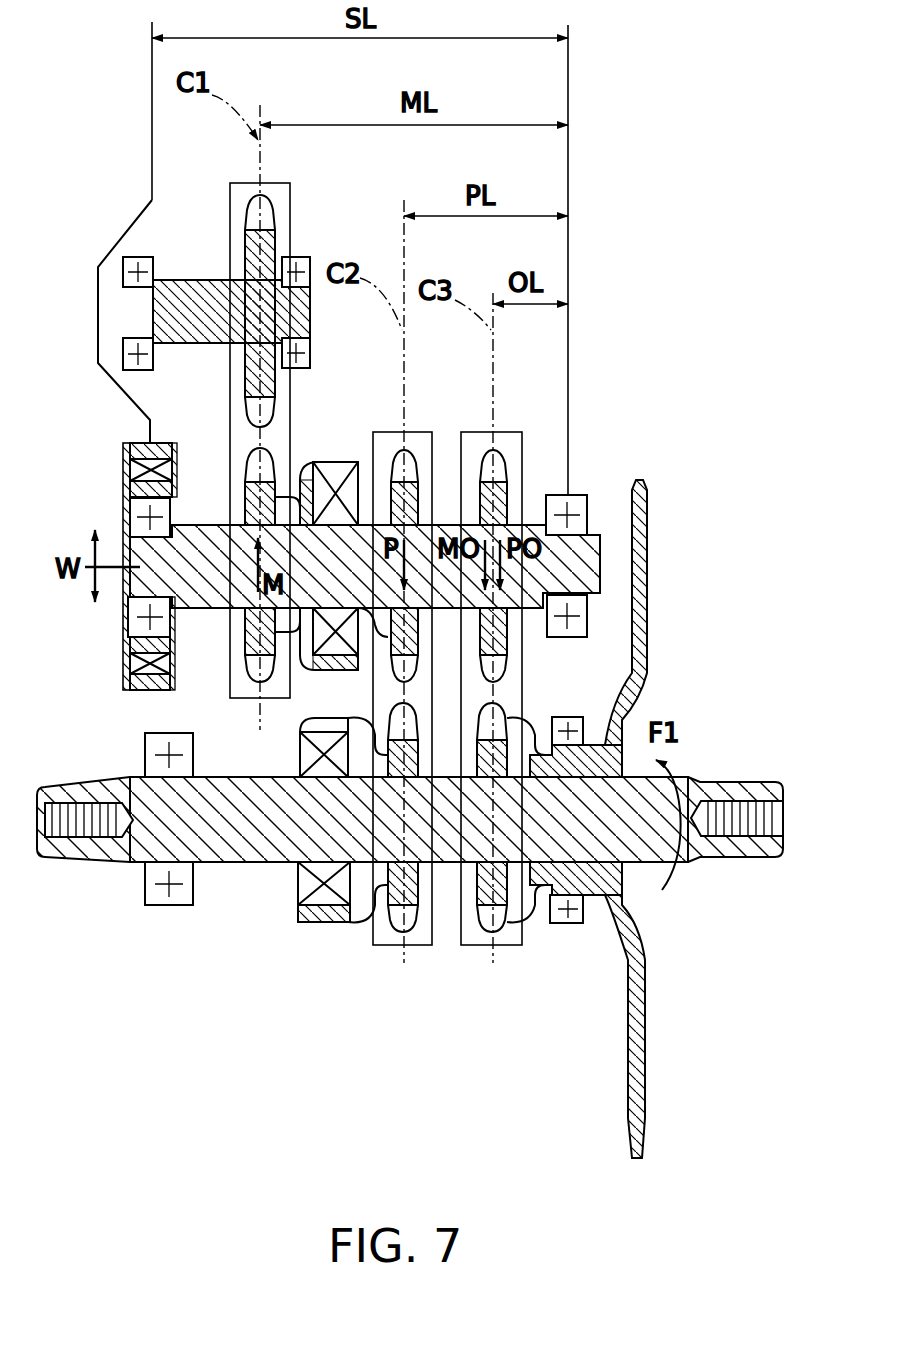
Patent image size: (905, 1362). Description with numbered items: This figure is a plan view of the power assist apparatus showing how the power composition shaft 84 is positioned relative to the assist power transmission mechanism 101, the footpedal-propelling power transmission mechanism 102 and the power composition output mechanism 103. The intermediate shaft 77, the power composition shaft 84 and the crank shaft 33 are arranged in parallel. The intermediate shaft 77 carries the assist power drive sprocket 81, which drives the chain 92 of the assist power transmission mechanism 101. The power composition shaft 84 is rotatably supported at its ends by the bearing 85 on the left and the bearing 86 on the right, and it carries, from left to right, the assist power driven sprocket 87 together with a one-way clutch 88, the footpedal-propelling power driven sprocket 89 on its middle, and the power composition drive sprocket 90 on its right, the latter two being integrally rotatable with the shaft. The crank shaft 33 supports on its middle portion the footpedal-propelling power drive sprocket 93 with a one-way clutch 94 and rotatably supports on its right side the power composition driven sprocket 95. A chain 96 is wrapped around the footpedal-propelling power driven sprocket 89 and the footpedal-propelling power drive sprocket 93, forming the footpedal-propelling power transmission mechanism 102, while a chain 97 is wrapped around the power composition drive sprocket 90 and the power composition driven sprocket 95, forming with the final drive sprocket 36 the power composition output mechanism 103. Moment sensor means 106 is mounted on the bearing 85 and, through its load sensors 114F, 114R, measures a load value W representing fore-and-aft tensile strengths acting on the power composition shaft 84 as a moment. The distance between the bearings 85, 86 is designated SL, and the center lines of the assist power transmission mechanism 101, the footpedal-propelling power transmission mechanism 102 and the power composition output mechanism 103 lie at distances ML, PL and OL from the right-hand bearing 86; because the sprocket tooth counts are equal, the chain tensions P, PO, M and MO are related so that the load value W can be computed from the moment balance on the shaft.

The crank shaft 33 is at (108, 777).
The final drive sprocket 36 is at (650, 548).
The intermediate shaft 77 is at (190, 280).
The assist power drive sprocket 81 is at (270, 216).
The power composition shaft 84 is at (198, 525).
The bearing 85 is at (130, 516).
The bearing 86 is at (568, 500).
The assist power driven sprocket 87 is at (246, 664).
The one-way clutch 88 is at (328, 470).
The footpedal-propelling power driven sprocket 89 is at (396, 450).
The power composition drive sprocket 90 is at (497, 450).
The chain 92 is at (238, 430).
The footpedal-propelling power drive sprocket 93 is at (395, 932).
The one-way clutch 94 is at (320, 896).
The power composition driven sprocket 95 is at (500, 932).
The chain 96 is at (375, 691).
The chain 97 is at (524, 690).
The assist power transmission mechanism 101 is at (228, 182).
The footpedal-propelling power transmission mechanism 102 is at (383, 430).
The power composition output mechanism 103 is at (470, 430).
The moment sensor means 106 is at (113, 430).
The load sensor 114F is at (124, 468).
The load sensor 114R is at (128, 660).